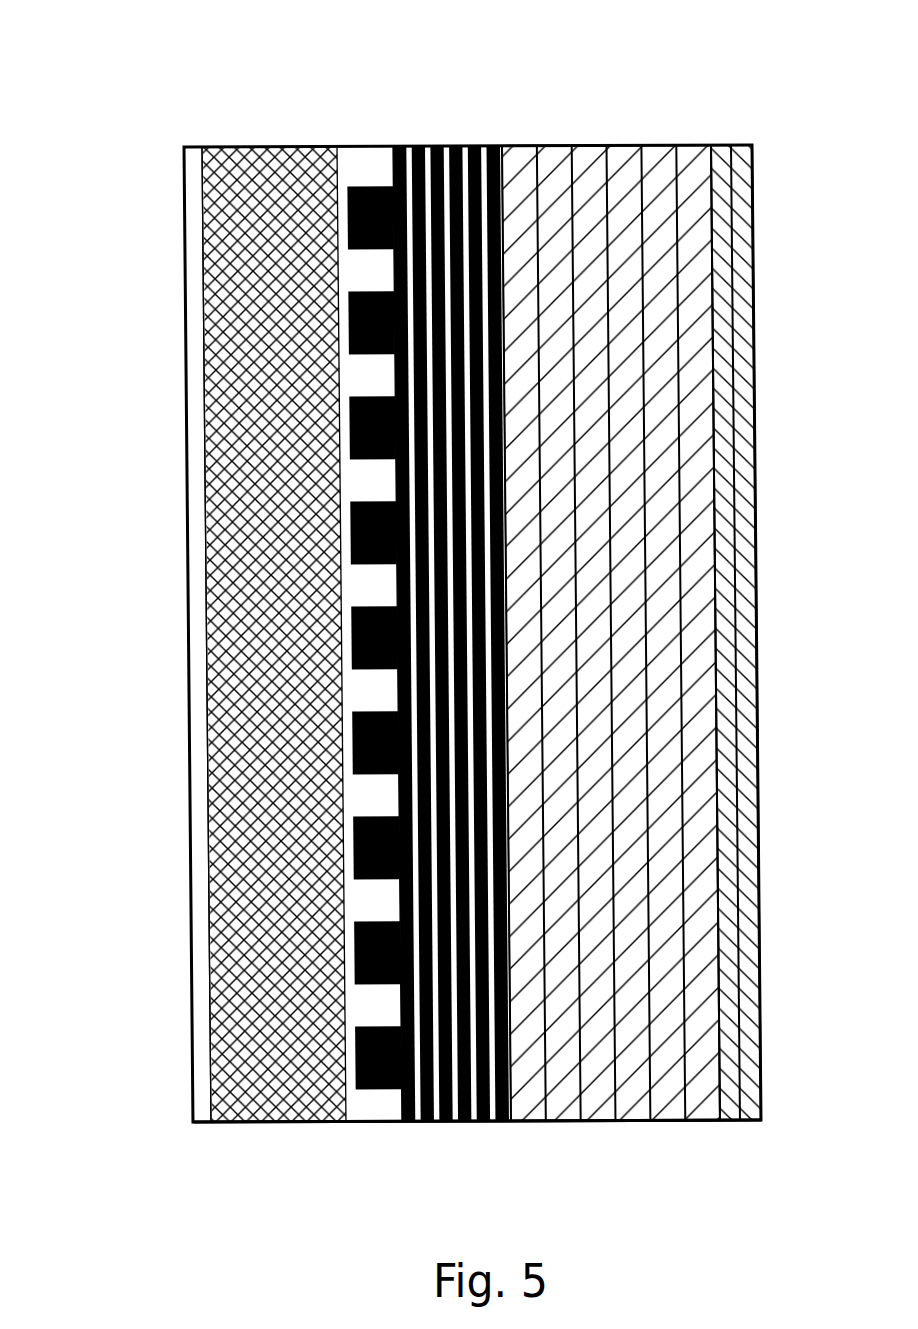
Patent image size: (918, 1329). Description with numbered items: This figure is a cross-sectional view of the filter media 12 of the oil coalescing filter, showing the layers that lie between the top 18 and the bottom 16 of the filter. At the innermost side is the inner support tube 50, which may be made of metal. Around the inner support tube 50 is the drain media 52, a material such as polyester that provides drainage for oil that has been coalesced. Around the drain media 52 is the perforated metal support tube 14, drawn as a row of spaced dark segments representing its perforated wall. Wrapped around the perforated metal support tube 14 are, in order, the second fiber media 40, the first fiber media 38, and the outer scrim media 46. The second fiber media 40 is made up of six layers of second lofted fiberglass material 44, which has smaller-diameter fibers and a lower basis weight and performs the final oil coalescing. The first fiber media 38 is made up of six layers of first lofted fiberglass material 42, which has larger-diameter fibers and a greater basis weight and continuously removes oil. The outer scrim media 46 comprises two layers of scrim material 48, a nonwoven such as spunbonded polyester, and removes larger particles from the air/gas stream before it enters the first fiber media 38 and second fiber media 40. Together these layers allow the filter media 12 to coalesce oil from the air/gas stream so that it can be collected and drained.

The filter media 12 is at (157, 83).
The perforated metal support tube 14 is at (368, 1108).
The bottom 16 is at (207, 1183).
The top 18 is at (277, 110).
The first fiber media 38 is at (510, 1125).
The second fiber media 40 is at (505, 1125).
The first lofted fiberglass material 42 is at (688, 146).
The second lofted fiberglass material 44 is at (493, 146).
The outer scrim media 46 is at (720, 1125).
The scrim material 48 is at (740, 145).
The inner support tube 50 is at (200, 940).
The drain media 52 is at (240, 1078).